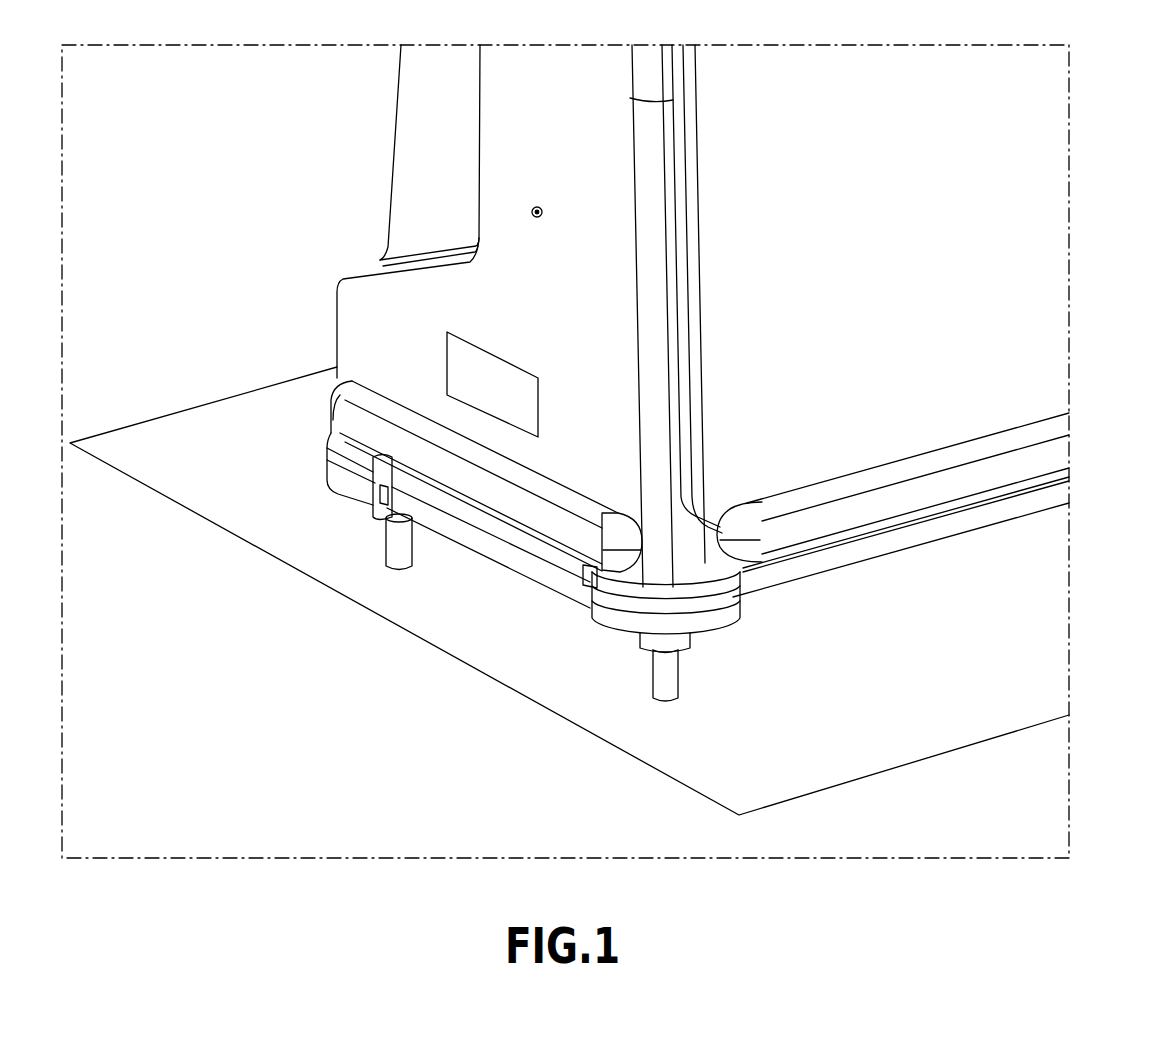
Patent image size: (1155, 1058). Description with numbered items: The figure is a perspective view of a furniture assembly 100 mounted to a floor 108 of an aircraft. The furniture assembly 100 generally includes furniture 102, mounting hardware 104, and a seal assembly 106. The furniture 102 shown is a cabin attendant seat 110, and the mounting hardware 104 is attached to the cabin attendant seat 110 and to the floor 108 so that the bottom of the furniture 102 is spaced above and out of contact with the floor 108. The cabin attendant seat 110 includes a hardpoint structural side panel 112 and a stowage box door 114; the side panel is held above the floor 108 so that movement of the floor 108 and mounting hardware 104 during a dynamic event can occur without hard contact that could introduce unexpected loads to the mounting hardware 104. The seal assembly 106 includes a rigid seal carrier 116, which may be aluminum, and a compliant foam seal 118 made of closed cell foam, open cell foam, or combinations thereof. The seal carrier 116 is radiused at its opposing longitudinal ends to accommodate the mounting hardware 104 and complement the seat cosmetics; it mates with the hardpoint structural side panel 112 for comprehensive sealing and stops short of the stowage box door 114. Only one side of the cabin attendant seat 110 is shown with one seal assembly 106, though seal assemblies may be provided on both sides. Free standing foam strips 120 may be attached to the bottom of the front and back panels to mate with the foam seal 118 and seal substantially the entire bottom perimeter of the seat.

The furniture assembly 100 is at (192, 127).
The furniture 102 is at (387, 140).
The mounting hardware 104 is at (376, 547).
The seal assembly 106 is at (312, 442).
The floor 108 is at (950, 727).
The cabin attendant seat 110 is at (1069, 128).
The hardpoint structural side panel 112 is at (405, 232).
The stowage box door 114 is at (1030, 213).
The seal carrier 116 is at (482, 522).
The foam seal 118 is at (548, 570).
The free standing foam strips 120 is at (977, 518).